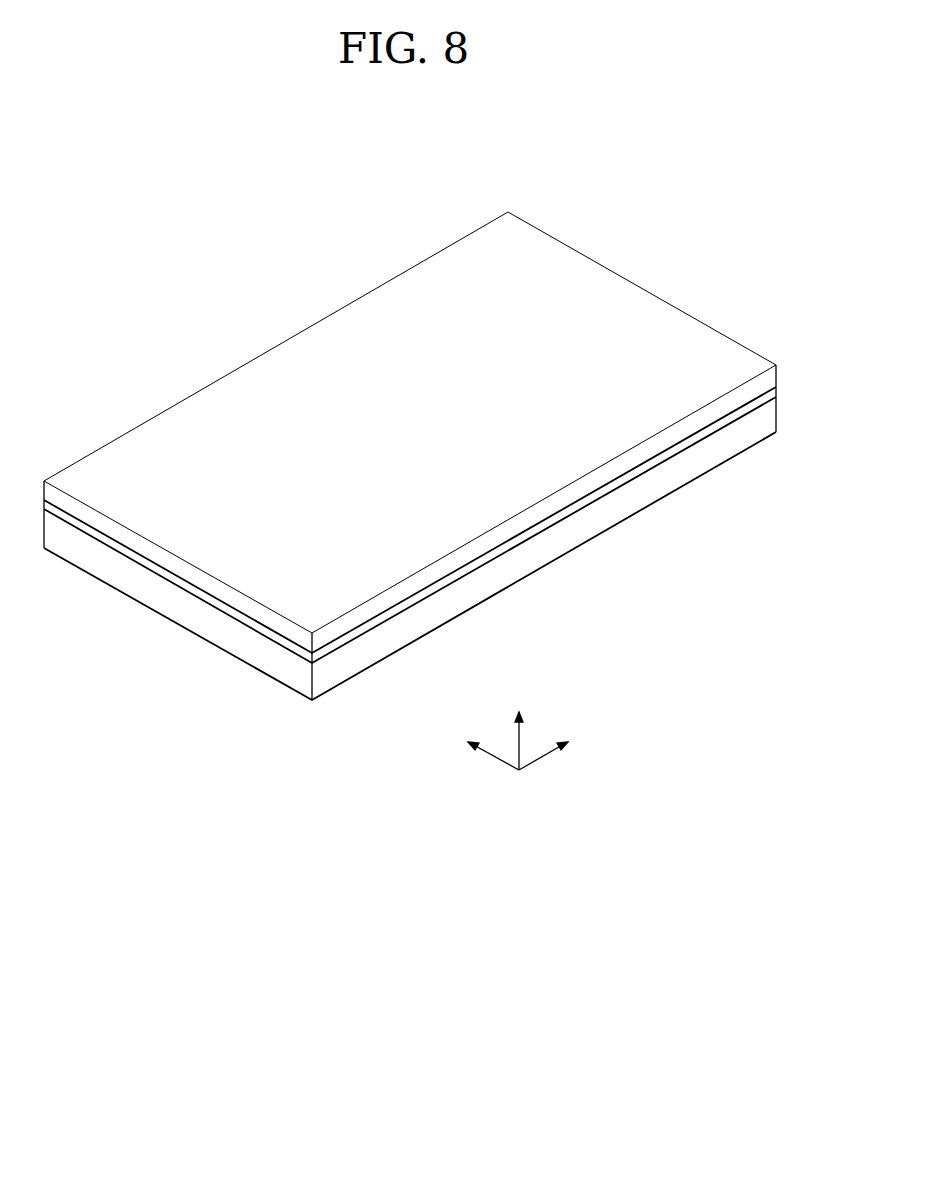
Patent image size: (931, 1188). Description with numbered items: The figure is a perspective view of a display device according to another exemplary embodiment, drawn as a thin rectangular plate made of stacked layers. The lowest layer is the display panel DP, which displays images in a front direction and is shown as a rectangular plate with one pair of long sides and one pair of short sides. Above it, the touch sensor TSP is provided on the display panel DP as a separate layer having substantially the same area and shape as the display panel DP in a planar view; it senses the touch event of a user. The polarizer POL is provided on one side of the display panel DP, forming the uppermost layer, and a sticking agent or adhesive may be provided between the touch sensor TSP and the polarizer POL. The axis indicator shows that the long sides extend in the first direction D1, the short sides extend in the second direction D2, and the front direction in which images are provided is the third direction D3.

The polarizer POL is at (172, 563).
The touch sensor TSP is at (202, 596).
The display panel DP is at (232, 642).
The first direction D1 is at (558, 751).
The second direction D2 is at (481, 751).
The third direction D3 is at (520, 729).